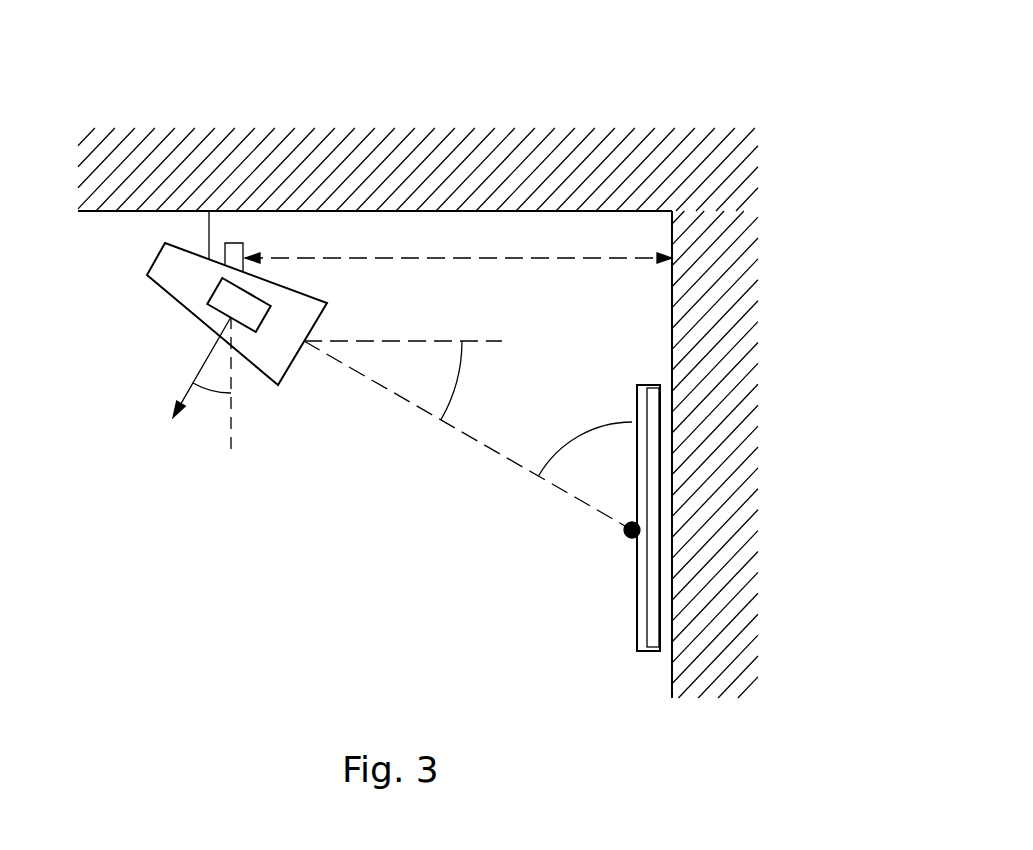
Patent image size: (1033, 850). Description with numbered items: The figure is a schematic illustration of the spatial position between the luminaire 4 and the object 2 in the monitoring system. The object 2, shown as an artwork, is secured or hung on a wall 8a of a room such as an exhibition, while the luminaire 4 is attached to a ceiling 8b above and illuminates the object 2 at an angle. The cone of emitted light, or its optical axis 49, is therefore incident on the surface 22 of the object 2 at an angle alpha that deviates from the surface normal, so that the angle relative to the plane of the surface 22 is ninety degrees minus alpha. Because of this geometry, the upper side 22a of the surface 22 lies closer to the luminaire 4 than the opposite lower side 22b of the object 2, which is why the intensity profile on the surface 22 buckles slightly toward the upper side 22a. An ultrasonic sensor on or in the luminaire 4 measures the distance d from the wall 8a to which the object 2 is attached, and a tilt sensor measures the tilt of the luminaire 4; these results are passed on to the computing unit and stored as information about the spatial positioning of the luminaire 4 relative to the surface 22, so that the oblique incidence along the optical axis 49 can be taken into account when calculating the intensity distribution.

The ceiling 8b is at (104, 208).
The wall 8a is at (673, 672).
The distance d is at (502, 257).
The luminaire 4 is at (169, 297).
The optical axis 49 is at (445, 426).
The surface 22 is at (638, 588).
The object 2 is at (647, 522).
The upper side of the surface 22a is at (621, 384).
The lower side 22b is at (590, 646).